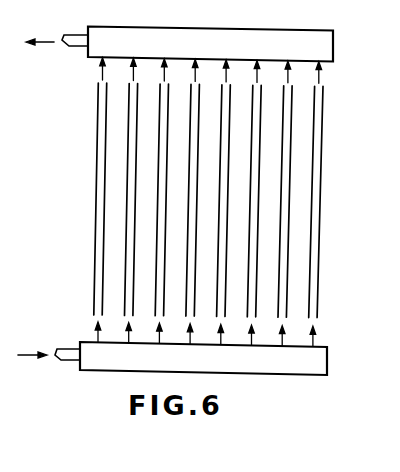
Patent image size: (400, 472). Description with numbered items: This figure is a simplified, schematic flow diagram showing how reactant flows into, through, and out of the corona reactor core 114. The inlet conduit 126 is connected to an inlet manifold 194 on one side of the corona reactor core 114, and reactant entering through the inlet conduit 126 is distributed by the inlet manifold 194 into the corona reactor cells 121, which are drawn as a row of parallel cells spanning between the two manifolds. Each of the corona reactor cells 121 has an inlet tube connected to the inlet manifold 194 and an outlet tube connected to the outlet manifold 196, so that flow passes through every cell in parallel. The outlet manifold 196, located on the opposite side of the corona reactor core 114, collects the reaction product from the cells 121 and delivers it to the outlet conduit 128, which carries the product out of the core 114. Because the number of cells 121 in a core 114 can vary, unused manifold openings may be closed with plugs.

The corona reactor core 114 is at (337, 187).
The corona reactor cells 121 is at (291, 141).
The inlet conduit 126 is at (68, 359).
The outlet conduit 128 is at (73, 48).
The inlet manifold 194 is at (277, 368).
The outlet manifold 196 is at (235, 31).